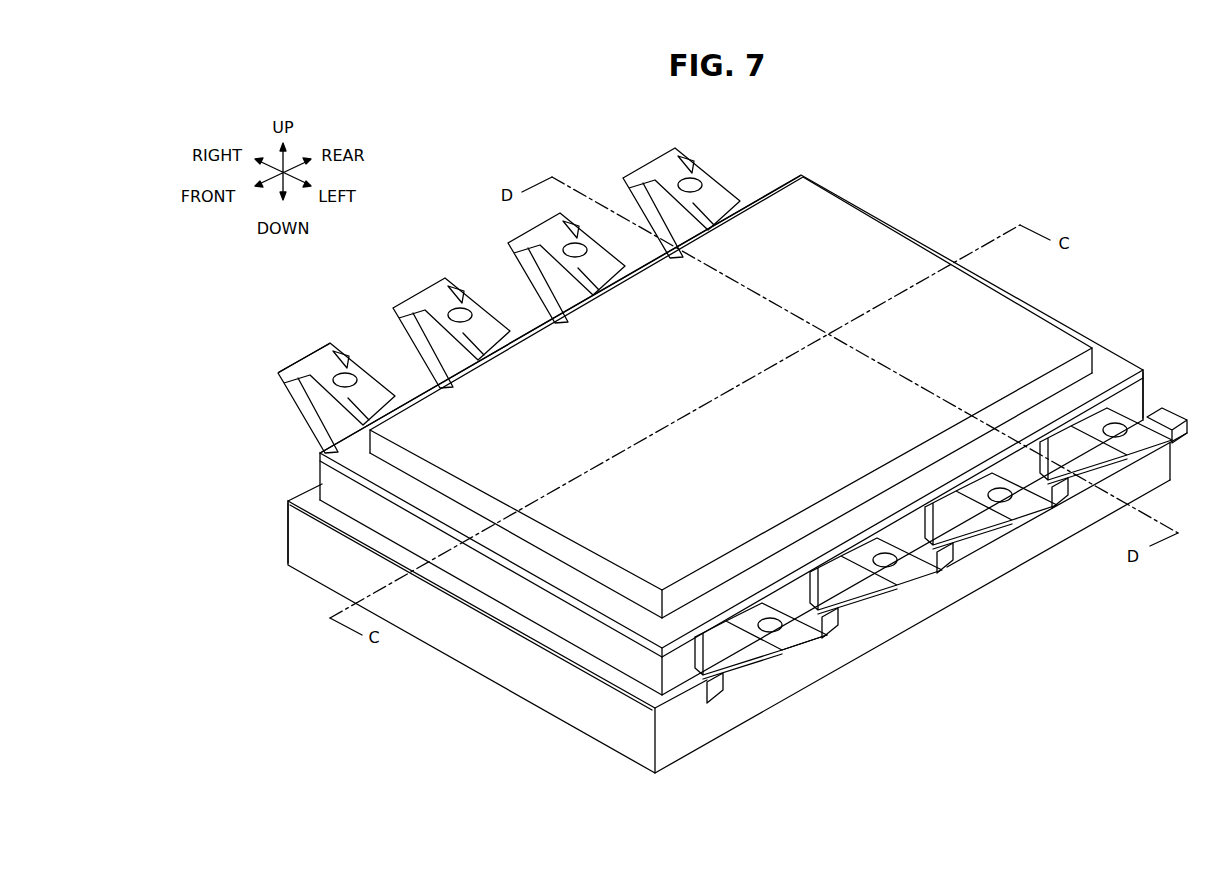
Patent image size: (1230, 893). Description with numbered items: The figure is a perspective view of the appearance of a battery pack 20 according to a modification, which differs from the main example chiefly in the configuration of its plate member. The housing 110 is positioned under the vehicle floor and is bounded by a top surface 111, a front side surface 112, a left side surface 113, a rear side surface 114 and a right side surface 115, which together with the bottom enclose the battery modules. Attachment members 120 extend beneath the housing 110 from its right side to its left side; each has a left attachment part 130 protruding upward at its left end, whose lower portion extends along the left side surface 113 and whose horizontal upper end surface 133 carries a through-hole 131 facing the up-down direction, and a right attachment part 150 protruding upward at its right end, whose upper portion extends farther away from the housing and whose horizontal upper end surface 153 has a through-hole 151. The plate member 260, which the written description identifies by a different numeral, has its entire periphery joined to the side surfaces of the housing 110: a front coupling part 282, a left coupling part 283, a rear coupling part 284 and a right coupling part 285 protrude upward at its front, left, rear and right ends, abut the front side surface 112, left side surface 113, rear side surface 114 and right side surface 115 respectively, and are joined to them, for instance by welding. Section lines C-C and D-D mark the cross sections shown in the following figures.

The battery pack 20 is at (909, 139).
The housing 110 is at (932, 234).
The top surface 111 is at (841, 212).
The front side surface 112 is at (517, 593).
The left side surface 113 is at (915, 542).
The rear side surface 114 is at (1127, 398).
The right side surface 115 is at (777, 194).
The attachment member 120 is at (800, 662).
The left attachment part 130 is at (718, 690).
The through-hole 131 is at (786, 650).
The upper end surface 133 is at (850, 640).
The right attachment part 150 is at (290, 403).
The through-hole 151 is at (357, 357).
The upper end surface 153 is at (311, 362).
The tray 260 is at (1017, 568).
The front coupling part 282 is at (520, 682).
The left coupling part 283 is at (1072, 528).
The rear coupling part 284 is at (1150, 412).
The right coupling part 285 is at (308, 490).